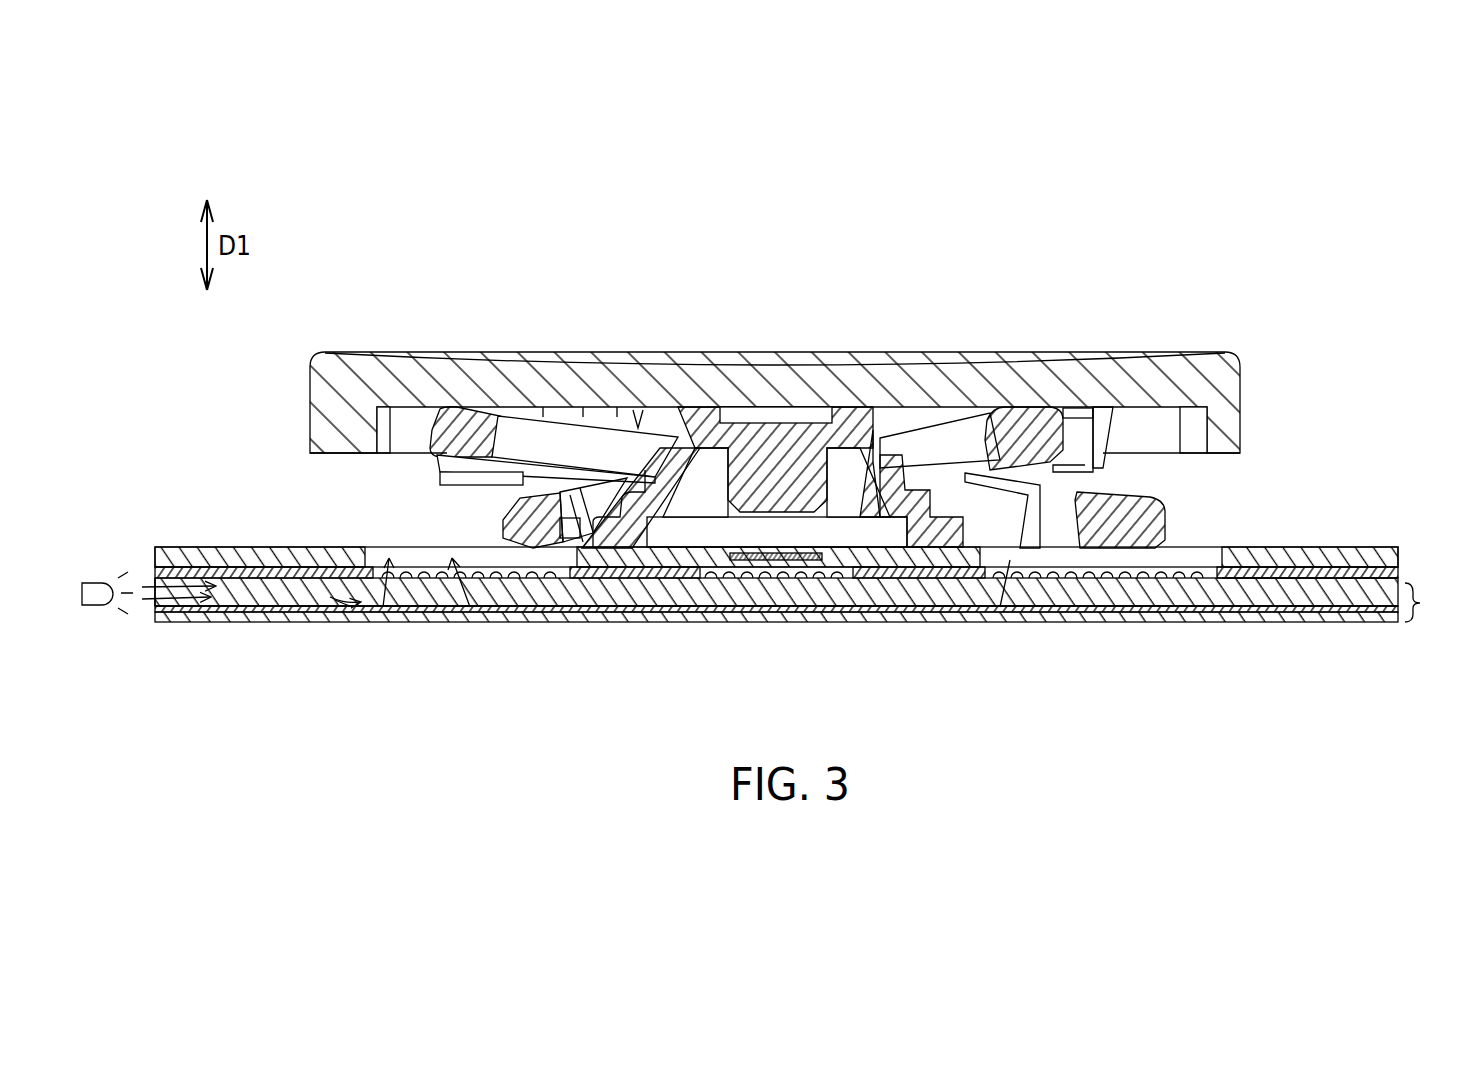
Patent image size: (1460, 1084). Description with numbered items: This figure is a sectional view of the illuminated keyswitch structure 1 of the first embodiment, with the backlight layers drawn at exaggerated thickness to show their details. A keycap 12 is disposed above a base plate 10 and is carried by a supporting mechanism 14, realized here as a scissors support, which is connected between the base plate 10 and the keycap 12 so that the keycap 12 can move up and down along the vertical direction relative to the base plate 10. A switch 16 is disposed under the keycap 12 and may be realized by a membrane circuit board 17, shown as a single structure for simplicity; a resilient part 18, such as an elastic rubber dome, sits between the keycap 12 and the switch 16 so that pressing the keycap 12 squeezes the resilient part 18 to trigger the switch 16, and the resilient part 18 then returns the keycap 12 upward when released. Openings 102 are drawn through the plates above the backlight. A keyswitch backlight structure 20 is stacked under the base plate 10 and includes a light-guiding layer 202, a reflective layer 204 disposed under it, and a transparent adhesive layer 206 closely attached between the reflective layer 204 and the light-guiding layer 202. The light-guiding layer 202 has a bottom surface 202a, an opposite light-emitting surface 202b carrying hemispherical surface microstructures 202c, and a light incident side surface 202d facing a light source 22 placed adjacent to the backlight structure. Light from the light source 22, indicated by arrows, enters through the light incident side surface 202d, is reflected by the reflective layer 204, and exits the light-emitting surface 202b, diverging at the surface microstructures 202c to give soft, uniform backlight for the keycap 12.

The illuminated keyswitch structure 1 is at (1227, 194).
The base plate 10 is at (1392, 573).
The keycap 12 is at (848, 372).
The supporting mechanism 14 is at (470, 505).
The switch 16 is at (758, 550).
The membrane circuit board 17 is at (1382, 553).
The resilient part 18 is at (794, 435).
The keyswitch backlight structure 20 is at (1430, 602).
The light source 22 is at (93, 583).
The light transmitting opening 102 is at (1175, 568).
The light-guiding layer 202 is at (1122, 598).
The bottom surface 202a is at (1338, 604).
The light-emitting surface 202b is at (1328, 578).
The surface microstructures 202c is at (1200, 575).
The light incident side surface 202d is at (155, 600).
The reflective layer 204 is at (1258, 622).
The transparent adhesive layer 206 is at (1192, 610).